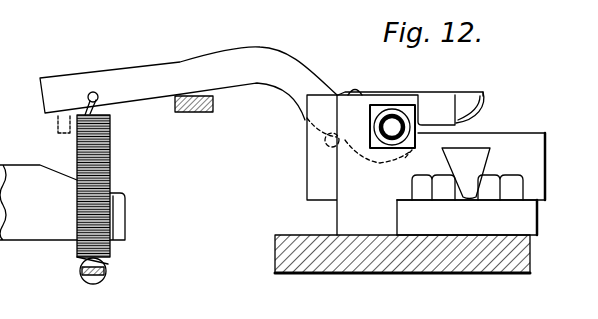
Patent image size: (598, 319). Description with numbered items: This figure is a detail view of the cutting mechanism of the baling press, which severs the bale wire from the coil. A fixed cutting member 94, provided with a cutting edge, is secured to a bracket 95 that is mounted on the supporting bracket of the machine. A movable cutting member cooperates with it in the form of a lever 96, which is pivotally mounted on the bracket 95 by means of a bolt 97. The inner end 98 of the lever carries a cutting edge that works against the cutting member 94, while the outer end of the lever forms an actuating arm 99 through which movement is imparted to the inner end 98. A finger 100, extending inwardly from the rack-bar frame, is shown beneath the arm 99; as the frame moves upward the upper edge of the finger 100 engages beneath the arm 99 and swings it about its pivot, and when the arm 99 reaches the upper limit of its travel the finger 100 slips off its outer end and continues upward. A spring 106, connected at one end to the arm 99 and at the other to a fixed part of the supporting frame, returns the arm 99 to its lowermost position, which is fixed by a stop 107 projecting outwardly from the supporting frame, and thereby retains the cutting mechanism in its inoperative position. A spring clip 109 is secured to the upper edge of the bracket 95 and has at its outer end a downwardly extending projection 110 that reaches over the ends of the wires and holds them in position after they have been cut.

The cutting member 94 is at (545, 148).
The bracket 95 is at (535, 215).
The lever 96 is at (322, 92).
The bolt 97 is at (392, 110).
The inner end 98 is at (486, 98).
The actuating arm 99 is at (105, 72).
The finger 100 is at (58, 128).
The spring 106 is at (110, 164).
The stop 107 is at (213, 104).
The spring clip 109 is at (405, 92).
The projection 110 is at (468, 100).